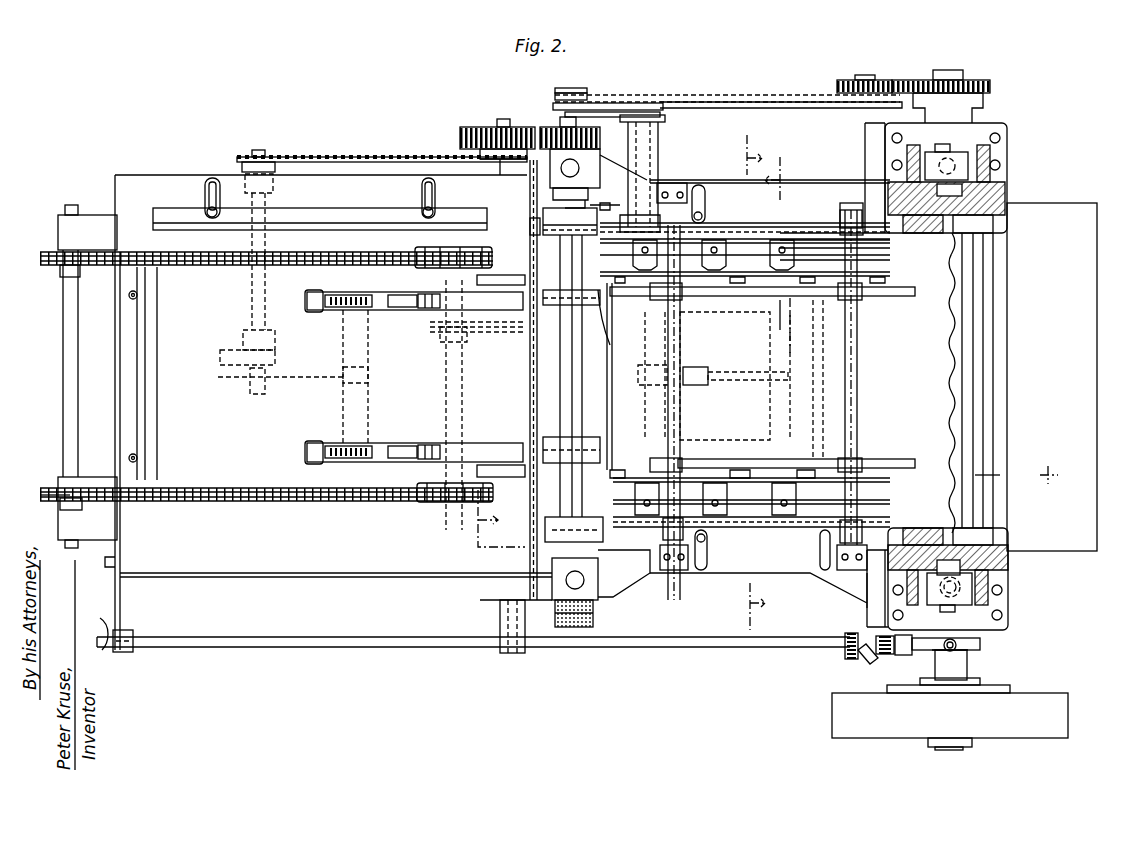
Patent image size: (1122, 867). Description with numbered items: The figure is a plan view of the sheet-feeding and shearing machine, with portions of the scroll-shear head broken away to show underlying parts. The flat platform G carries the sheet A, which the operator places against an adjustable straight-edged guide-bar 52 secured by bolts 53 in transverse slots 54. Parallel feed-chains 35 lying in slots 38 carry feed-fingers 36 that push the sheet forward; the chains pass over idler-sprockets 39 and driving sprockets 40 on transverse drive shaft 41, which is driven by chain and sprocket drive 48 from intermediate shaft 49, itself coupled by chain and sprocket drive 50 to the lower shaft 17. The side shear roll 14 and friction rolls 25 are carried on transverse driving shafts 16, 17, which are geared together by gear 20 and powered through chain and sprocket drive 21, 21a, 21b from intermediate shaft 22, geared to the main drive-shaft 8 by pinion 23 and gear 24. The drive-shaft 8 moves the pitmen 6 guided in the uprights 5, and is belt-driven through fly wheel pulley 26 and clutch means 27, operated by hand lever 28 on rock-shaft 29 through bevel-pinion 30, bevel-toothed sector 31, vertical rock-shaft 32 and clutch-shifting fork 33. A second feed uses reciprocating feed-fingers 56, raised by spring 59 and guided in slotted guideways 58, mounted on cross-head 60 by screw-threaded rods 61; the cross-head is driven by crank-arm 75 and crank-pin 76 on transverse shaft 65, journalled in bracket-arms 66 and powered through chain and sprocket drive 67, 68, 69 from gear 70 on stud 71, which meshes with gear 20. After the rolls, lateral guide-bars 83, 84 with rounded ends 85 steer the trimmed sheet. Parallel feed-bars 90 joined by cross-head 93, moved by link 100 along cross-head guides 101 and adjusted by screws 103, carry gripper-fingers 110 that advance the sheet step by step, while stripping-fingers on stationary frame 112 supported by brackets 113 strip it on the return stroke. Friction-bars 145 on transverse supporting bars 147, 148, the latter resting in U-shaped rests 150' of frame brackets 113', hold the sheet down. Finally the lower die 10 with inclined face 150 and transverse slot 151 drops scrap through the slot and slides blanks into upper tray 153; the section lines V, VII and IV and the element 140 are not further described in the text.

The platform G is at (150, 192).
The vertical uprights 5 is at (1008, 572).
The pitmen 6 is at (945, 150).
The drive-shaft 8 is at (942, 70).
The lower die 10 is at (958, 388).
The side shear roll 14 is at (550, 237).
The transverse driving shaft 16 is at (562, 105).
The transverse driving shaft 17 is at (569, 88).
The gear 20 is at (548, 128).
The chain and sprocket drive 21 is at (690, 93).
The chain and sprocket drive 21a is at (590, 100).
The chain and sprocket drive 21b is at (870, 108).
The intermediate shaft 22 is at (868, 78).
The pinion 23 is at (846, 80).
The gear 24 is at (978, 80).
The friction rolls 25 is at (608, 320).
The fly wheel pulley 26 is at (996, 725).
The clutch means 27 is at (980, 645).
The hand lever 28 is at (108, 652).
The longitudinal rock-shaft 29 is at (368, 648).
The bevel-pinion 30 is at (845, 648).
The bevel-toothed sector 31 is at (862, 662).
The vertical rock-shaft 32 is at (887, 654).
The clutch-shifting fork 33 is at (935, 652).
The feed-chains 35 is at (158, 268).
The feed-fingers 36 is at (68, 268).
The slots 38 is at (295, 504).
The idler-sprockets 39 is at (80, 490).
The driving sprockets 40 is at (462, 504).
The transverse drive shaft 41 is at (464, 400).
The chain and sprocket drive 48 is at (470, 340).
The intermediate shaft 49 is at (652, 160).
The chain and sprocket drive 50 is at (614, 120).
The guide-bar 52 is at (333, 220).
The bolts 53 is at (207, 212).
The transverse slots 54 is at (212, 180).
The reciprocating feed-fingers 56 is at (403, 308).
The slotted guideways 58 is at (475, 446).
The compressed spring 59 is at (378, 312).
The cross-head 60 is at (370, 410).
The screw-threaded rods 61 is at (352, 312).
The transverse shaft 65 is at (270, 340).
The bracket-arms 66 is at (275, 184).
The chain and sprocket drive 67 is at (343, 158).
The chain and sprocket drive 68 is at (268, 158).
The sprocket 69 is at (500, 165).
The gear 70 is at (462, 130).
The stud 71 is at (500, 120).
The crank-arm 75 is at (235, 340).
The crank-pin 76 is at (240, 385).
The lateral guide-bar 83 is at (718, 225).
The lateral guide-bar 84 is at (735, 528).
The rounded ends 85 is at (615, 225).
The feed-bars 90 is at (880, 284).
The cross-head 93 is at (770, 395).
The link 100 is at (738, 372).
The cross-head guides 101 is at (710, 458).
The screws 103 is at (783, 298).
The gripper-fingers 110 is at (750, 296).
The stationary frame 112 is at (705, 572).
The brackets 113 is at (836, 569).
The frame brackets 113' is at (681, 187).
The sprocket block 140 is at (480, 252).
The friction-bars 145 is at (855, 305).
The transverse supporting bar 147 is at (852, 400).
The transverse supporting bar 148 is at (676, 330).
The inclined face 150 is at (1003, 380).
The U-shaped rests 150' is at (678, 564).
The transverse slot 151 is at (995, 290).
The upper tray 153 is at (1052, 377).
The sheet A is at (955, 416).
The section line V is at (752, 383).
The section line VII is at (780, 251).
The section line IV is at (764, 511).